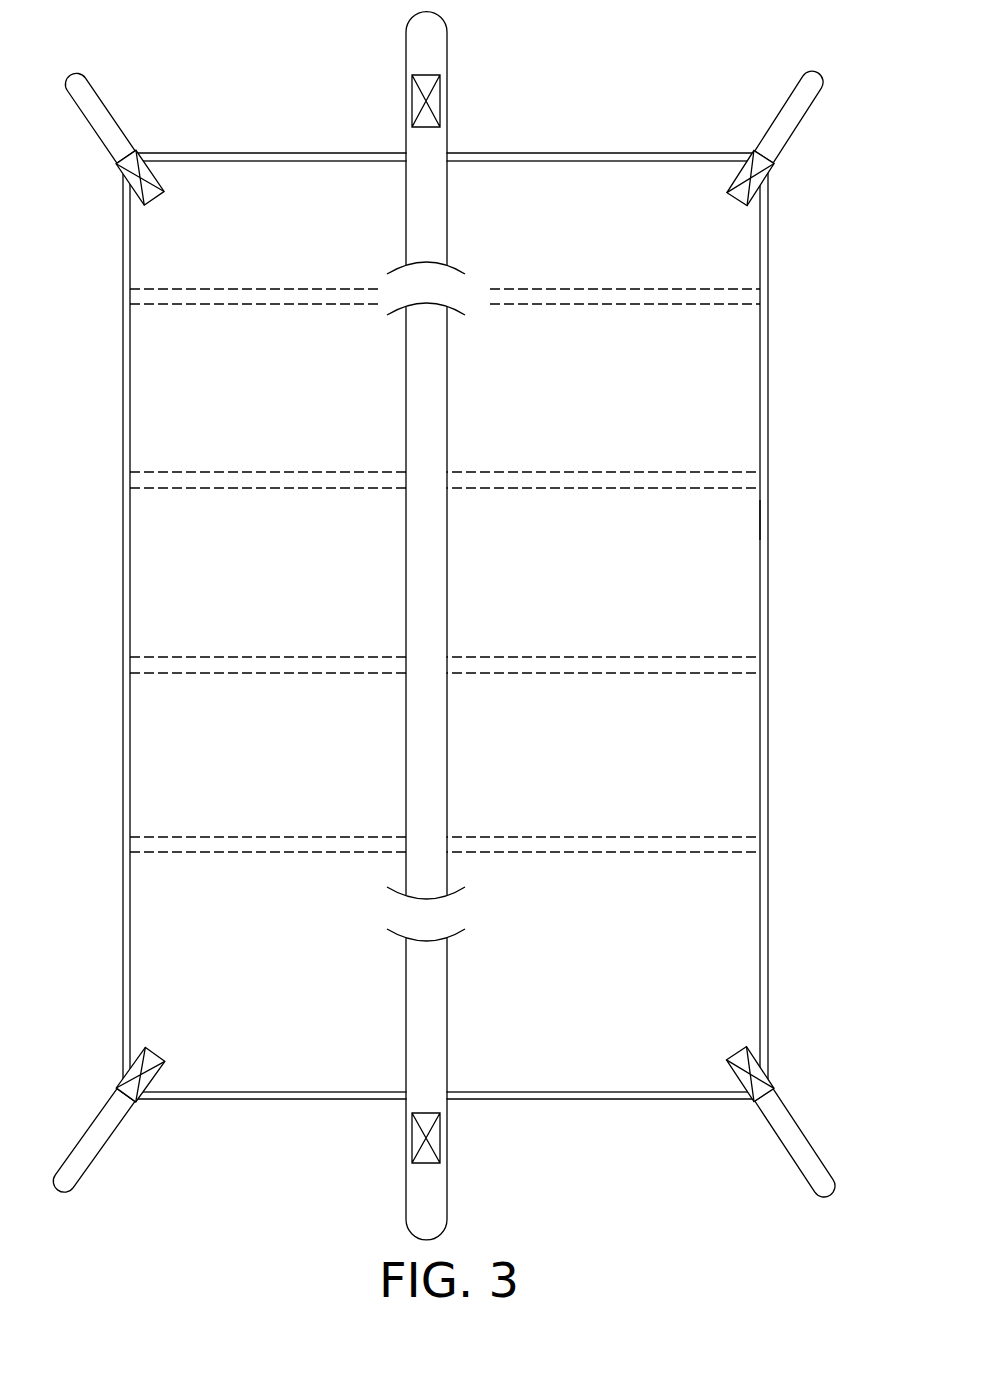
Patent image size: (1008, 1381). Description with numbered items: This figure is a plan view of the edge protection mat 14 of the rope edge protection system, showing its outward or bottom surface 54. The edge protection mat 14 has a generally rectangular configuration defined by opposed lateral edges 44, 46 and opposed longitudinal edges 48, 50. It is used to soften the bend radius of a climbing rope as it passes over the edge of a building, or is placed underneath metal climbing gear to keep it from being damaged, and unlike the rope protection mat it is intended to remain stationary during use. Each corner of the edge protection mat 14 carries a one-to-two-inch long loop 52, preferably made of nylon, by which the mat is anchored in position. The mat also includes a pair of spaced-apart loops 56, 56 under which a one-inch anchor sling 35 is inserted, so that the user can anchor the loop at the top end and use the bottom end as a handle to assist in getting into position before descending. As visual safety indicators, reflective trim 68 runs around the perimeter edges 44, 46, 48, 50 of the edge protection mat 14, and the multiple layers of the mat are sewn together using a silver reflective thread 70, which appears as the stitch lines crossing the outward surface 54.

The edge protection mat 14 is at (461, 626).
The anchor sling 35 is at (432, 522).
The lateral edge 44 is at (612, 152).
The lateral edge 46 is at (316, 1100).
The longitudinal edge 48 is at (770, 606).
The longitudinal edge 50 is at (122, 606).
The loop 52 is at (98, 115).
The outward or bottom surface 54 is at (740, 522).
The spaced-apart loop 56 is at (445, 290).
The reflective trim 68 is at (522, 152).
The silver reflective thread 70 is at (612, 305).